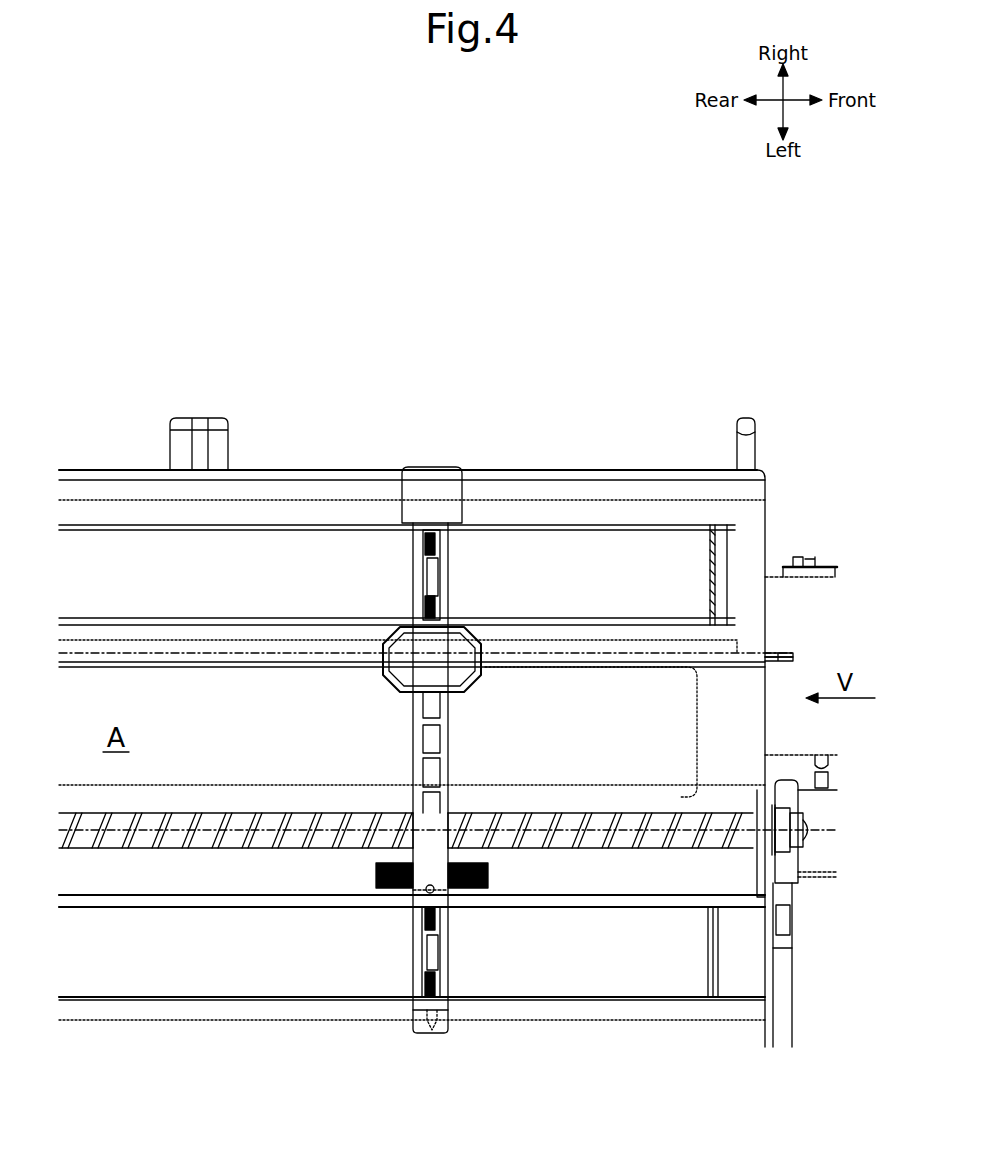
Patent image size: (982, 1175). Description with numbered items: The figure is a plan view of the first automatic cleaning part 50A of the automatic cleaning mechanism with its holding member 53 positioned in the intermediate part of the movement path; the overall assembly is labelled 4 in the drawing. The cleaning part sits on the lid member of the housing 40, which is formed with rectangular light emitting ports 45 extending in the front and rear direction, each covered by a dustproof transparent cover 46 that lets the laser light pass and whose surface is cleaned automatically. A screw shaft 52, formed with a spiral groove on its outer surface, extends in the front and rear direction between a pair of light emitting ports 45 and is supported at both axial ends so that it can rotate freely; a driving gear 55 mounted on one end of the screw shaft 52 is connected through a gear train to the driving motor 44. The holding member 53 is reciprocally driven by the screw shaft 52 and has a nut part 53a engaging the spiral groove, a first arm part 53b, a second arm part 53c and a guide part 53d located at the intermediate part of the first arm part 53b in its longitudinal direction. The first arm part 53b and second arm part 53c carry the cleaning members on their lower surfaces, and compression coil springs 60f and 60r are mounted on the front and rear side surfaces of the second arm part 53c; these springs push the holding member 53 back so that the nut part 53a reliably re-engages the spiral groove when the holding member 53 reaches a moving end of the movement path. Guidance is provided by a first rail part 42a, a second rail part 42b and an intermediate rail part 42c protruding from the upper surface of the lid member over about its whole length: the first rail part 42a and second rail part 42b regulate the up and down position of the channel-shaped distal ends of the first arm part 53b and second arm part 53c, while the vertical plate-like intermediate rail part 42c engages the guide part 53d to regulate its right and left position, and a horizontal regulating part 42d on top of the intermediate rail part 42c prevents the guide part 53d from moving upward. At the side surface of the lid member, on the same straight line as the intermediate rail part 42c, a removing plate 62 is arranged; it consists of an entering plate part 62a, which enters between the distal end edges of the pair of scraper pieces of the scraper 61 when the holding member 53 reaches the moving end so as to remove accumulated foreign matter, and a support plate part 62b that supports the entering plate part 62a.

The conveying apparatus 4 is at (124, 362).
The housing 40 is at (646, 467).
The first rail part 42a is at (677, 485).
The second rail part 42b is at (683, 1020).
The intermediate rail part 42c is at (160, 653).
The regulating part 42d is at (100, 643).
The driving motor 44 is at (803, 557).
The light emitting port 45 is at (383, 527).
The transparent cover 46 is at (292, 567).
The first automatic cleaning part 50A is at (393, 465).
The screw shaft 52 is at (593, 837).
The holding member 53 is at (447, 762).
The nut part 53a is at (413, 950).
The first arm part 53b is at (443, 570).
The second arm part 53c is at (425, 825).
The guide part 53d is at (467, 640).
The driving gear 55 is at (809, 824).
The compression coil spring 60f is at (473, 888).
The compression coil spring 60r is at (377, 870).
The octagonal guide 61 is at (381, 665).
The removing plate 62 is at (828, 622).
The entering plate part 62a is at (806, 636).
The support plate part 62b is at (770, 655).